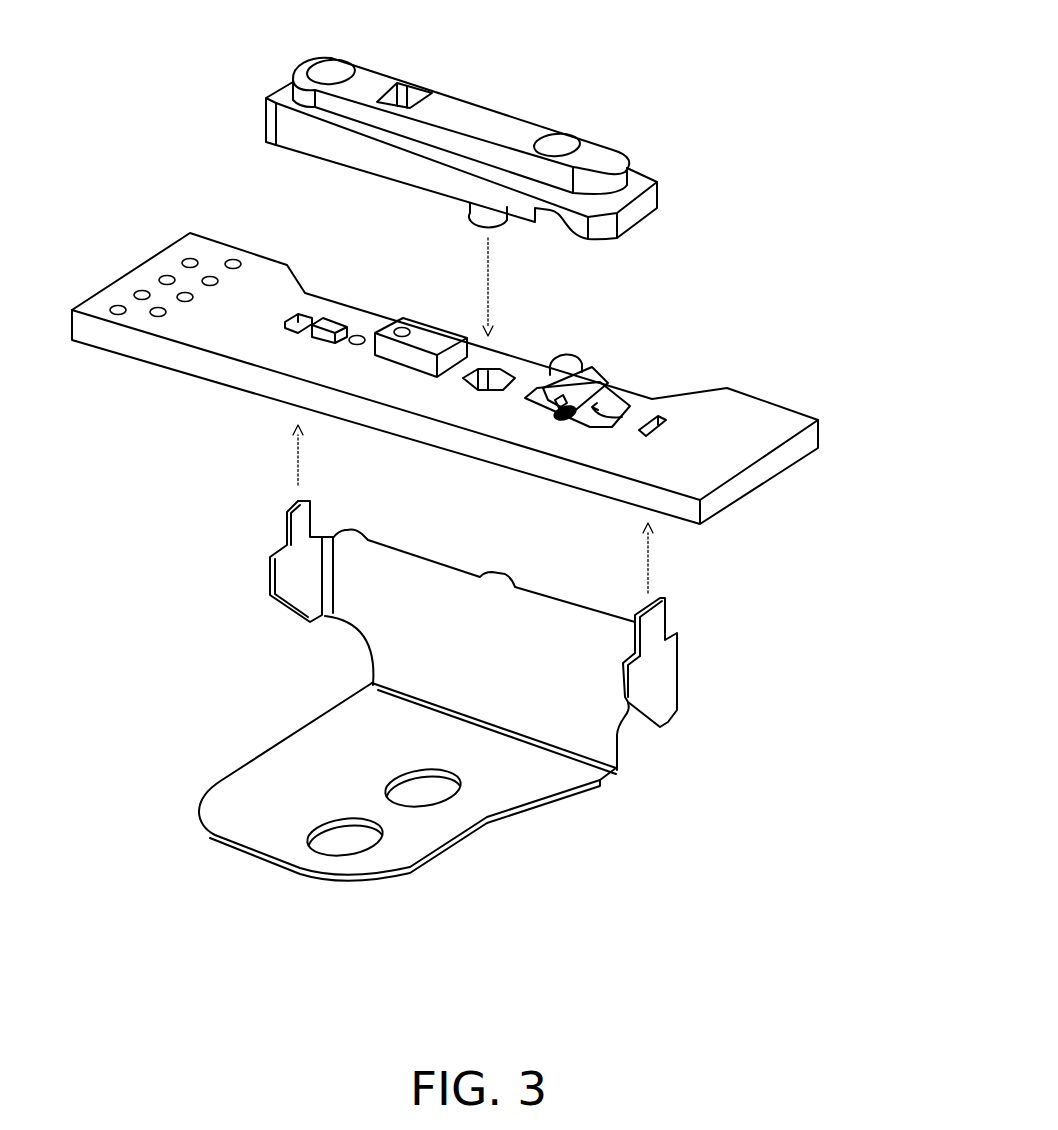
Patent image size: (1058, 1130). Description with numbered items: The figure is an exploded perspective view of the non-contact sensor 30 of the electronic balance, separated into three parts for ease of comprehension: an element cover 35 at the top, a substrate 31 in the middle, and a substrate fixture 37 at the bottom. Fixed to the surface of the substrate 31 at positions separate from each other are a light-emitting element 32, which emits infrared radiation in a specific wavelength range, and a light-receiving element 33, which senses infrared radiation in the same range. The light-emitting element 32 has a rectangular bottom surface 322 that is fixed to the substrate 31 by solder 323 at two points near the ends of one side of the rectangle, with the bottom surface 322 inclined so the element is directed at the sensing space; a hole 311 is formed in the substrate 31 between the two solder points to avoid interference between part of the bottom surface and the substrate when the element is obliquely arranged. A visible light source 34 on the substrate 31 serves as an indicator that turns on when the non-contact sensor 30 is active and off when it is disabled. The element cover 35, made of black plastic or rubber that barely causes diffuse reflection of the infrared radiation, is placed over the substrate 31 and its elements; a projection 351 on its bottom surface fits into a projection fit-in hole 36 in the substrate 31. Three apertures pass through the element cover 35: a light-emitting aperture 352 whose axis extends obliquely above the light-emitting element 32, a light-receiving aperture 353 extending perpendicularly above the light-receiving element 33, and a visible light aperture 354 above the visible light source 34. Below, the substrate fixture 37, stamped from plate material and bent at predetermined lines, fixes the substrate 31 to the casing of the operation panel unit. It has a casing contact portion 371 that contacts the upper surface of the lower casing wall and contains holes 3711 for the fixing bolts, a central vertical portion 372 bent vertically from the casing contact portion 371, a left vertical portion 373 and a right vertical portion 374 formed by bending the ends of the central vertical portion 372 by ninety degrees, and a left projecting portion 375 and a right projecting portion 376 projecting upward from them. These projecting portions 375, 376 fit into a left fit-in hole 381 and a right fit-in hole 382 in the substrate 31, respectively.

The non-contact sensor 30 is at (804, 53).
The substrate 31 is at (760, 428).
The hole 311 is at (542, 393).
The light-emitting element 32 is at (595, 372).
The bottom surface 322 is at (633, 408).
The solder 323 is at (560, 417).
The light-receiving element 33 is at (400, 323).
The visible light source 34 is at (327, 315).
The element cover 35 is at (620, 177).
The projection 351 is at (482, 215).
The light-emitting aperture 352 is at (552, 143).
The light-receiving aperture 353 is at (417, 98).
The visible light aperture 354 is at (331, 74).
The projection fit-in hole 36 is at (493, 380).
The substrate fixture 37 is at (548, 835).
The casing contact portion 371 is at (313, 765).
The holes 3711 is at (425, 790).
The central vertical portion 372 is at (588, 712).
The left vertical portion 373 is at (300, 587).
The right vertical portion 374 is at (653, 685).
The left projecting portion 375 is at (298, 528).
The right projecting portion 376 is at (653, 623).
The left fit-in hole 381 is at (298, 323).
The right fit-in hole 382 is at (657, 420).